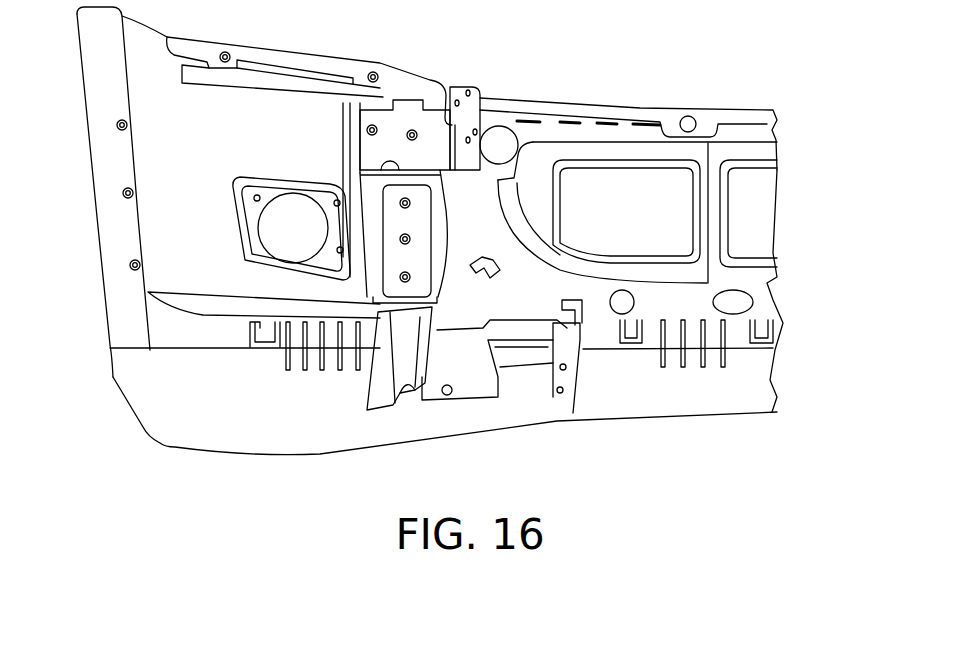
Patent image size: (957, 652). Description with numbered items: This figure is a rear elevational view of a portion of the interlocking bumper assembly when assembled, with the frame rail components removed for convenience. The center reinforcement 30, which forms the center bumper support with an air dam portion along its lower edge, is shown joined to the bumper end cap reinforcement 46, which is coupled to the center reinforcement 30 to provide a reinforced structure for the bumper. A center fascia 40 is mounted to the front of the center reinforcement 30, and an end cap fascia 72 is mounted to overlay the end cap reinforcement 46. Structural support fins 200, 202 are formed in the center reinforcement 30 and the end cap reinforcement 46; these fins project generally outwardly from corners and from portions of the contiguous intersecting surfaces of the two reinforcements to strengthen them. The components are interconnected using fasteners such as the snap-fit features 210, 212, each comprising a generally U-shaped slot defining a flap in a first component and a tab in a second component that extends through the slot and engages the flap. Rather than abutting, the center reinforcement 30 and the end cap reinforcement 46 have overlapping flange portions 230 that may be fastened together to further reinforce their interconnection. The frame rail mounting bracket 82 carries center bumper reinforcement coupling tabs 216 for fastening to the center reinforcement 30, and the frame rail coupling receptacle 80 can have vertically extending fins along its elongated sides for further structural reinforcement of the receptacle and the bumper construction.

The center reinforcement 30 is at (781, 384).
The center fascia 40 is at (767, 110).
The bumper end cap reinforcement 46 is at (143, 427).
The end cap fascia 72 is at (101, 317).
The frame rail coupling receptacle 80 is at (381, 262).
The frame rail mounting bracket 82 is at (484, 85).
The structural support fin 200 is at (707, 323).
The structural support fin 202 is at (358, 385).
The snap-fit feature 210 is at (500, 273).
The snap-fit feature 212 is at (250, 333).
The center bumper reinforcement coupling tab 216 is at (418, 150).
The overlapping flange portions 230 is at (558, 400).